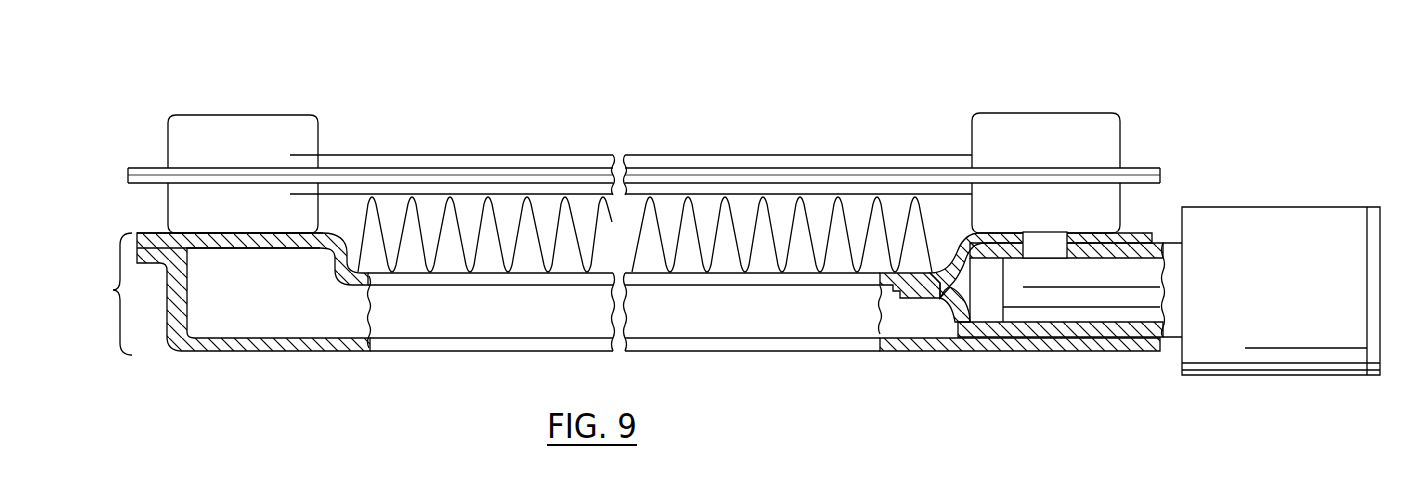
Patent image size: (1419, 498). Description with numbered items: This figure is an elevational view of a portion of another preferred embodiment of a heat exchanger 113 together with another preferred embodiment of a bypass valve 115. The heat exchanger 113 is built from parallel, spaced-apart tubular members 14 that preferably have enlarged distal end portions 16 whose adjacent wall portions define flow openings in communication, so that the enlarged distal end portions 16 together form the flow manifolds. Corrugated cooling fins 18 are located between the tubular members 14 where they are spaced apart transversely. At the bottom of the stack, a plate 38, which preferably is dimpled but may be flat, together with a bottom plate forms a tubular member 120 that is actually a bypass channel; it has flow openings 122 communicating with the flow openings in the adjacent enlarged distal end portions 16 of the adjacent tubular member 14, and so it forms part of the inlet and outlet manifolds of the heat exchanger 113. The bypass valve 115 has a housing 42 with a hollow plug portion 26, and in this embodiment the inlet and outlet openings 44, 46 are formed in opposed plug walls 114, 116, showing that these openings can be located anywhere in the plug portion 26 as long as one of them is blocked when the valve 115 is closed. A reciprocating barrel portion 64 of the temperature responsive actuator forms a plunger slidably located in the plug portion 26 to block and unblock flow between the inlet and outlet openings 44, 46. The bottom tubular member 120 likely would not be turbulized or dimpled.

The tubular member 14 is at (128, 168).
The enlarged distal end portion 16 is at (318, 130).
The corrugated cooling fin 18 is at (420, 207).
The hollow plug portion 26 is at (1080, 335).
The plate 38 is at (441, 280).
The housing 42 is at (893, 290).
The inlet opening 44 is at (1057, 252).
The outlet opening 46 is at (955, 311).
The barrel portion 64 is at (1107, 300).
The heat exchanger 113 is at (890, 90).
The plug wall 114 is at (992, 248).
The bypass valve 115 is at (1272, 357).
The plug wall 116 is at (1008, 327).
The tubular member 120 is at (216, 294).
The flow opening 122 is at (245, 241).